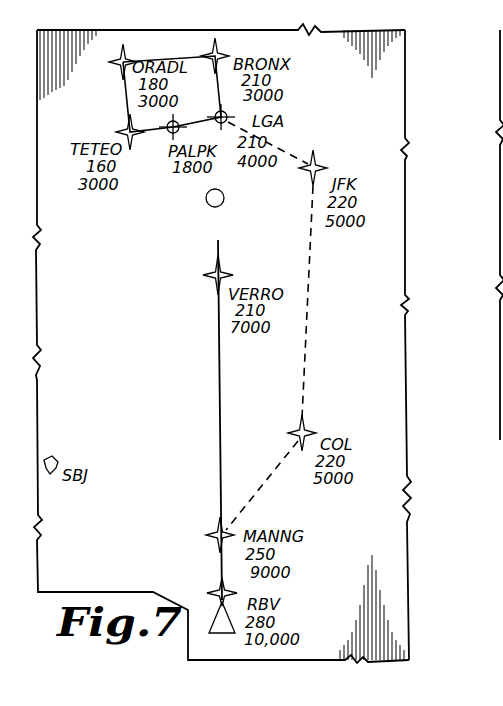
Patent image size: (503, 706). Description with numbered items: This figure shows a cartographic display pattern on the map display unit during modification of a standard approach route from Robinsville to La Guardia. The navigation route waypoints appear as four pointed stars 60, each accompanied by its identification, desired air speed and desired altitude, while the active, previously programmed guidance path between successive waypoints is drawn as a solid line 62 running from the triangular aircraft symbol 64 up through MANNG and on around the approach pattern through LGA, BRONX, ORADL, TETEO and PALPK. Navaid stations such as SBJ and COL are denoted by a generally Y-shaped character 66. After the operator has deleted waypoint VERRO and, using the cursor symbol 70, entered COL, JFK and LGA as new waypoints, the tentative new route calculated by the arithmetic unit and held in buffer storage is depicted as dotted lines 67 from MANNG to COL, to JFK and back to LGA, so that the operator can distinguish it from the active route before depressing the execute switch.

The four pointed star waypoint symbol 60 is at (116, 60).
The solid line 62 is at (172, 58).
The aircraft symbol 64 is at (218, 606).
The Y-shaped character 66 is at (312, 430).
The dotted lines 67 is at (292, 146).
The cursor symbol 70 is at (224, 200).